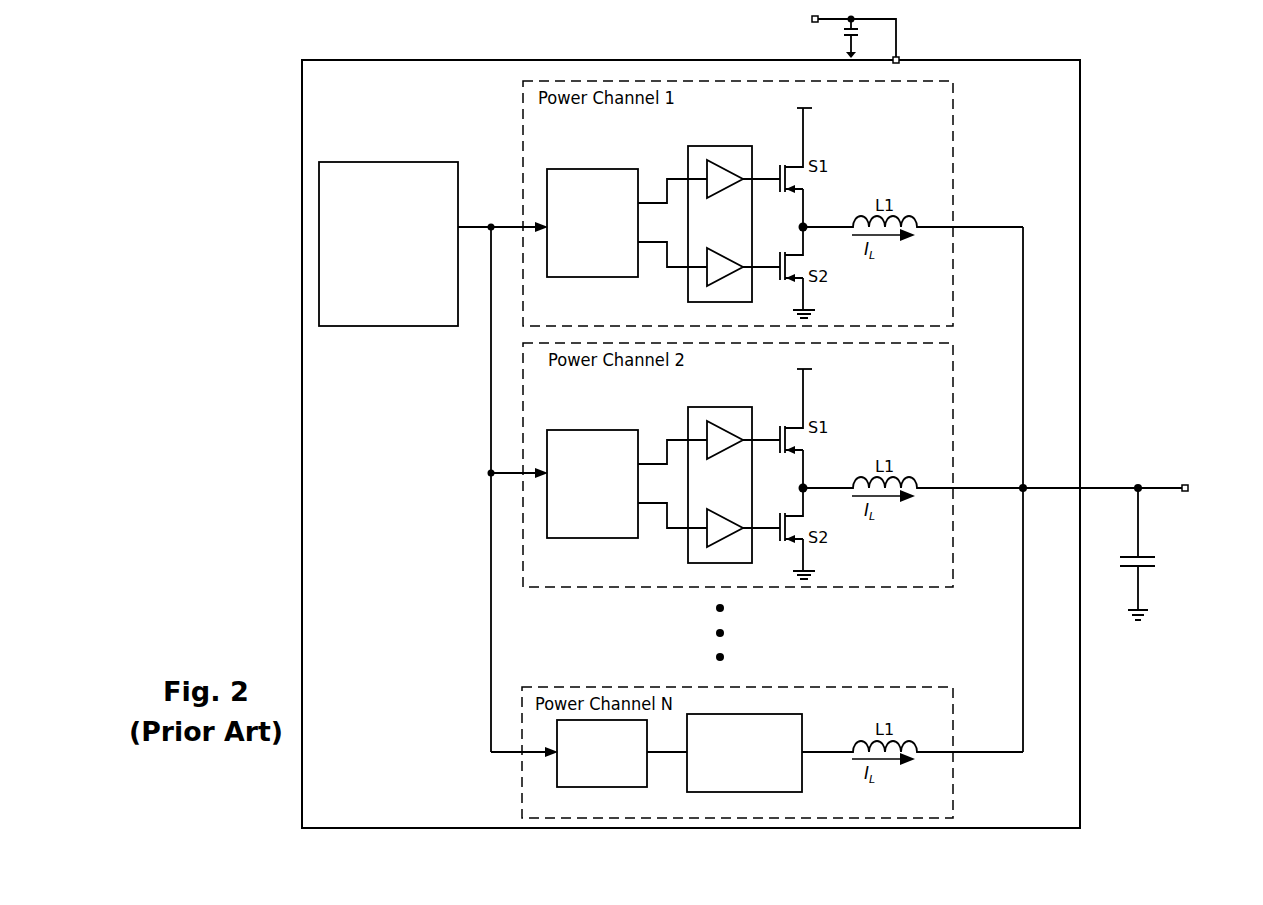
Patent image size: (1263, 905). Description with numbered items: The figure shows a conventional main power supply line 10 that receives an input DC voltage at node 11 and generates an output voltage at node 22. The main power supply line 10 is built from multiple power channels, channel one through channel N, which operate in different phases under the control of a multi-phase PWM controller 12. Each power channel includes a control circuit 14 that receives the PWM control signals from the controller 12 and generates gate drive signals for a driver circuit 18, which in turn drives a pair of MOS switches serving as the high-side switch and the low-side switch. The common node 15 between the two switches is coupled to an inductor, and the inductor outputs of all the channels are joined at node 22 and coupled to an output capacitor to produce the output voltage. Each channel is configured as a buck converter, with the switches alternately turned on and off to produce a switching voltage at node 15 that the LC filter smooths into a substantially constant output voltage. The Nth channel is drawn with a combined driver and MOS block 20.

The main power supply line 10 is at (612, 60).
The input voltage node 11 is at (904, 31).
The multi-phase PWM controller 12 is at (410, 326).
The control circuit 14 is at (623, 277).
The common node 15 is at (806, 223).
The driver circuit 18 is at (722, 146).
The driver/MOS stage 20 is at (762, 792).
The output voltage node 22 is at (1155, 486).